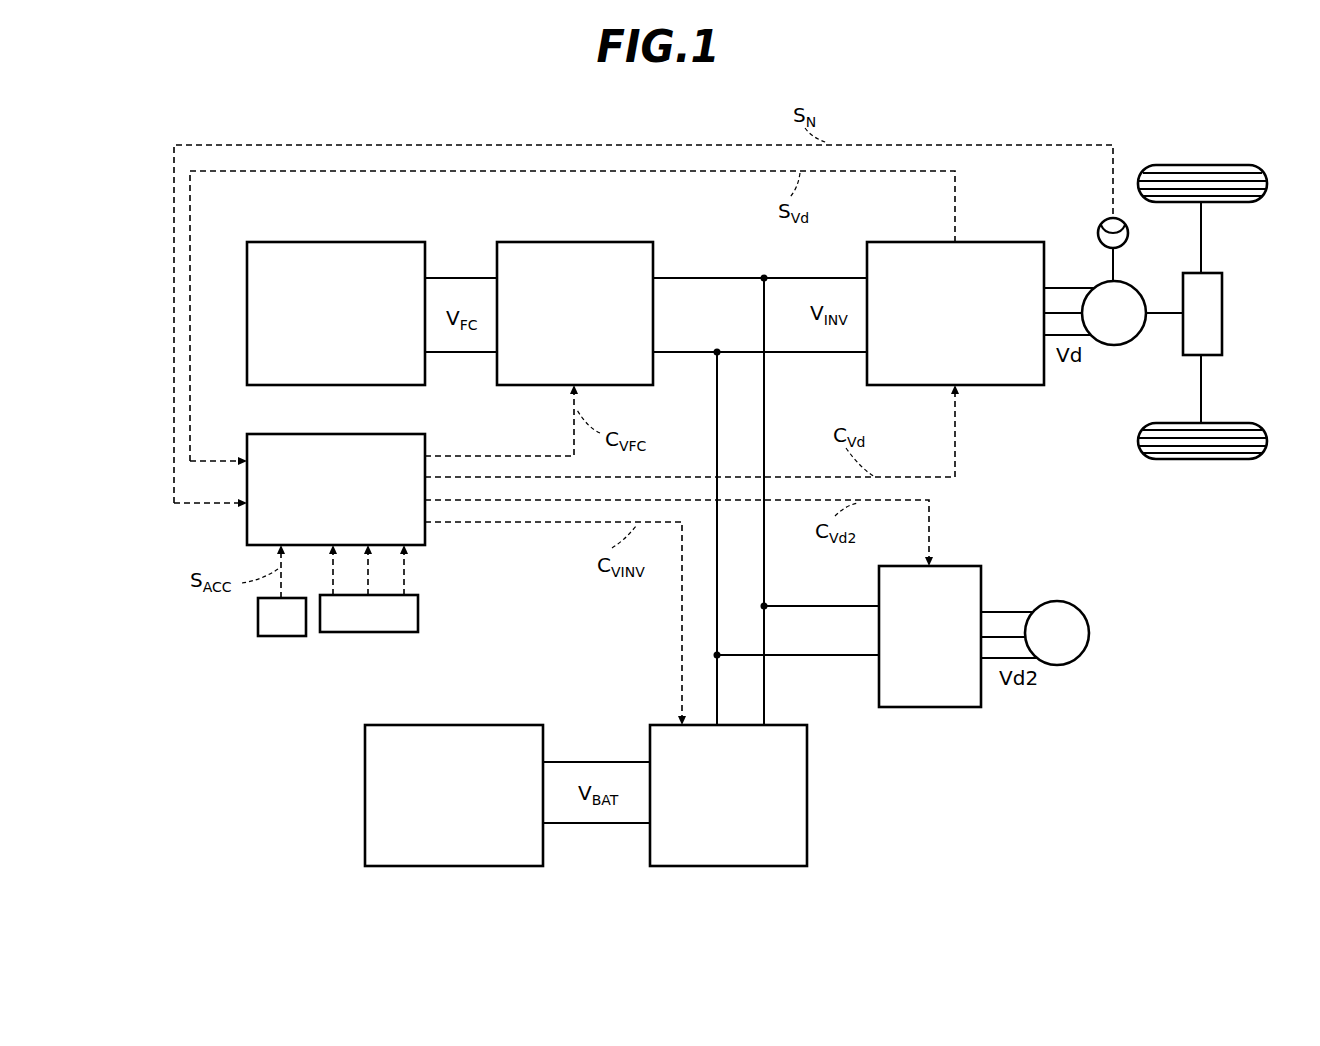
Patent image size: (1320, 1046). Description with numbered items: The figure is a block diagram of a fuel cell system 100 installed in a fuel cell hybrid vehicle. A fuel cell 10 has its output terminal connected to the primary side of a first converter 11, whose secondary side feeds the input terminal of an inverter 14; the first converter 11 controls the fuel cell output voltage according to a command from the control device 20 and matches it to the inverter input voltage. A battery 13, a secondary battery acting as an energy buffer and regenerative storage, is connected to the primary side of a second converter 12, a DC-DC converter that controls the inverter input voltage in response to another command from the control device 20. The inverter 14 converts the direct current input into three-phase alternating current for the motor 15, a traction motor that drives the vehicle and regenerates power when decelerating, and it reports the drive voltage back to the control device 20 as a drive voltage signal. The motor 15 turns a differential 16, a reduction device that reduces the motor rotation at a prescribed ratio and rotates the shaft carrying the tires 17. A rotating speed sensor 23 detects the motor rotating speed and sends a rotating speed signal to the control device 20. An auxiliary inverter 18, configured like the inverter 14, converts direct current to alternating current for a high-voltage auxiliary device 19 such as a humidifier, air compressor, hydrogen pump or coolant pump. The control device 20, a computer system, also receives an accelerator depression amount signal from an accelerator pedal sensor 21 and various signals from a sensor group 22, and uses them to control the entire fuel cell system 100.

The fuel cell 10 is at (366, 242).
The first converter 11 is at (574, 242).
The second converter 12 is at (809, 790).
The battery 13 is at (458, 725).
The inverter 14 is at (1000, 242).
The motor 15 is at (1126, 345).
The differential 16 is at (1215, 273).
The tire 17 is at (1204, 165).
The auxiliary inverter 18 is at (961, 566).
The high-voltage auxiliary device 19 is at (1064, 602).
The control device 20 is at (427, 441).
The accelerator pedal sensor 21 is at (283, 638).
The sensor group 22 is at (371, 634).
The rotating speed sensor 23 is at (1116, 218).
The fuel cell system 100 is at (962, 851).